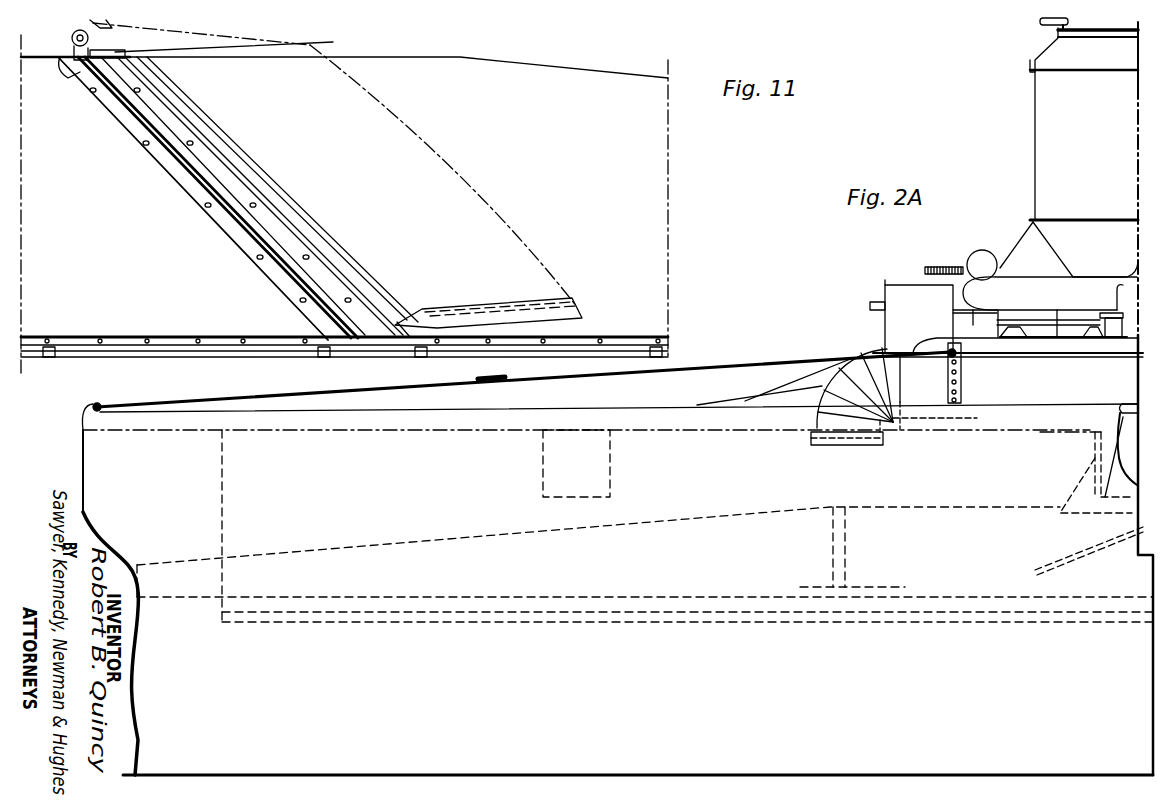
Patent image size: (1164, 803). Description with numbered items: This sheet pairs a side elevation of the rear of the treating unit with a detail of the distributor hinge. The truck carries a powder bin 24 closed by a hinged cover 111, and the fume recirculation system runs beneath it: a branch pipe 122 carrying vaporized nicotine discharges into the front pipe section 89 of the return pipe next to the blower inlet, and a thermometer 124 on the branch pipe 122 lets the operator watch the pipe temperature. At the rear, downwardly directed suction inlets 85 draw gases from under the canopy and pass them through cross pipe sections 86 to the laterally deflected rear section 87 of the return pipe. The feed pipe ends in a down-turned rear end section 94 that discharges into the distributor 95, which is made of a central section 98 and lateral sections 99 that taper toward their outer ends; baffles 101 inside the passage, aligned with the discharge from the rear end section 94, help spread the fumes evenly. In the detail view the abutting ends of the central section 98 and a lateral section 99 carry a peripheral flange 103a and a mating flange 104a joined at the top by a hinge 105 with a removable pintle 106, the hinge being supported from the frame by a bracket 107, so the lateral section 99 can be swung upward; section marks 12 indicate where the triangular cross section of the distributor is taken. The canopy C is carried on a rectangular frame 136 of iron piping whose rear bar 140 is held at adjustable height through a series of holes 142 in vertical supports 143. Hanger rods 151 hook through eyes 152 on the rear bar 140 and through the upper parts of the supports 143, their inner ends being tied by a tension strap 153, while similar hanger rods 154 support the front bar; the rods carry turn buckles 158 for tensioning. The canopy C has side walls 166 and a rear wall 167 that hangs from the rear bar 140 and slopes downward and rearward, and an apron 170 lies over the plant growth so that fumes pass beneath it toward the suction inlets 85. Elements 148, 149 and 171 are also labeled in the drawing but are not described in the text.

In FIG. 11, the section line of FIG. 12 is at (476, 28).
In FIG. 2A, the bin 24 is at (1058, 135).
In FIG. 2A, the suction inlets 85 is at (853, 446).
In FIG. 2A, the cross pipe sections 86 is at (920, 364).
In FIG. 2A, the rear section 87 is at (993, 342).
In FIG. 2A, the front pipe section 89 is at (1030, 252).
In FIG. 2A, the rear end section 94 is at (1100, 447).
In FIG. 2A, the distributor 95 is at (1000, 520).
In FIG. 11, the central section 98 is at (137, 305).
In FIG. 2A, the central section 98 is at (965, 522).
In FIG. 11, the lateral sections 99 is at (333, 42).
In FIG. 2A, the lateral sections 99 is at (448, 548).
In FIG. 2A, the baffles 101 is at (1090, 547).
In FIG. 11, the peripheral flange 103a is at (165, 152).
In FIG. 11, the flange 104a is at (140, 106).
In FIG. 11, the hinge 105 is at (80, 56).
In FIG. 11, the removable pintle 106 is at (96, 51).
In FIG. 11, the bracket 107 is at (118, 29).
In FIG. 2A, the hinged cover 111 is at (1057, 32).
In FIG. 2A, the branch pipe 122 is at (982, 260).
In FIG. 2A, the thermometer 124 is at (927, 270).
In FIG. 2A, the frame 136 is at (1130, 403).
In FIG. 2A, the rear bar 140 is at (1120, 413).
In FIG. 2A, the holes 142 is at (980, 383).
In FIG. 2A, the vertical supports 143 is at (947, 376).
In FIG. 2A, the latch lever 148 is at (1096, 466).
In FIG. 2A, the body top edge 149 is at (604, 410).
In FIG. 2A, the hanger rods 151 is at (778, 362).
In FIG. 2A, the eyes 152 is at (97, 404).
In FIG. 2A, the tension strap 153 is at (1090, 353).
In FIG. 2A, the hanger rods 154 is at (800, 396).
In FIG. 2A, the turn buckles 158 is at (506, 380).
In FIG. 2A, the side walls 166 is at (83, 470).
In FIG. 2A, the rear wall 167 is at (410, 460).
In FIG. 2A, the apron 170 is at (245, 504).
In FIG. 2A, the floor channel 171 is at (583, 620).
In FIG. 2A, the canopy C is at (313, 438).